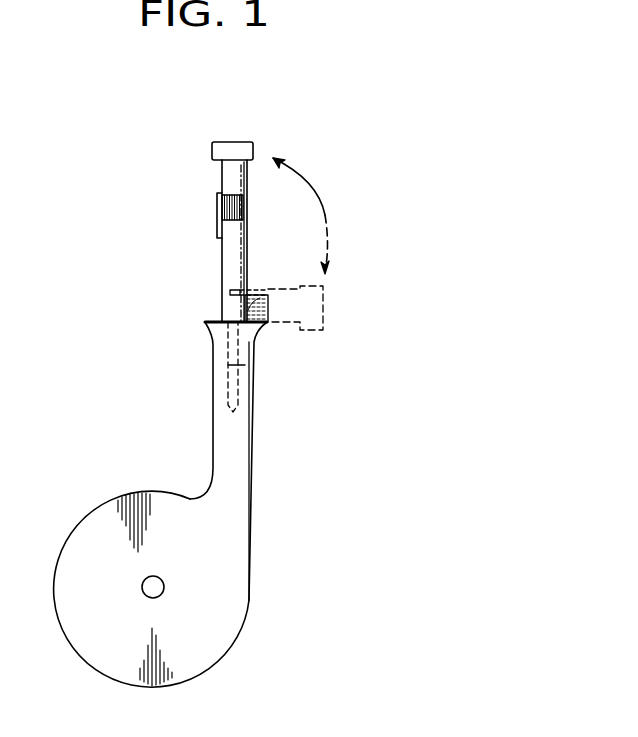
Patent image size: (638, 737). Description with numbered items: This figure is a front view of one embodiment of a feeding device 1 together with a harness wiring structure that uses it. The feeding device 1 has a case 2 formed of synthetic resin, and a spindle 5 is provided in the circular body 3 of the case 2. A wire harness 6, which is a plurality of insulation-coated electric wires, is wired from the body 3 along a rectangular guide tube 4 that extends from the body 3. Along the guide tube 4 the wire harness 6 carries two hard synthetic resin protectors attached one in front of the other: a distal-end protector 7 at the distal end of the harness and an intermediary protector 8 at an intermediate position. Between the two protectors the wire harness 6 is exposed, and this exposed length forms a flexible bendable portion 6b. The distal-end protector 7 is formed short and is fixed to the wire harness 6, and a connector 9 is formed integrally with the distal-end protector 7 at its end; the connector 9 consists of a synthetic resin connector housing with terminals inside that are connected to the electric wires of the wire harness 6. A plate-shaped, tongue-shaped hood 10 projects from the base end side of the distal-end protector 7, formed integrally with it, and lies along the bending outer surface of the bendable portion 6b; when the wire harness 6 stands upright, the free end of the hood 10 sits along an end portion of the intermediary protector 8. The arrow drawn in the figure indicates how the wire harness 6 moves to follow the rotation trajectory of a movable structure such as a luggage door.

The feeding device 1 is at (77, 306).
The case 2 is at (258, 503).
The circular body 3 is at (250, 603).
The guide tube 4 is at (237, 443).
The spindle 5 is at (155, 598).
The wire harness 6 is at (245, 365).
The bendable portion 6b is at (245, 207).
The distal-end protector 7 is at (233, 173).
The intermediary protector 8 is at (222, 270).
The connector 9 is at (245, 141).
The hood 10 is at (222, 228).